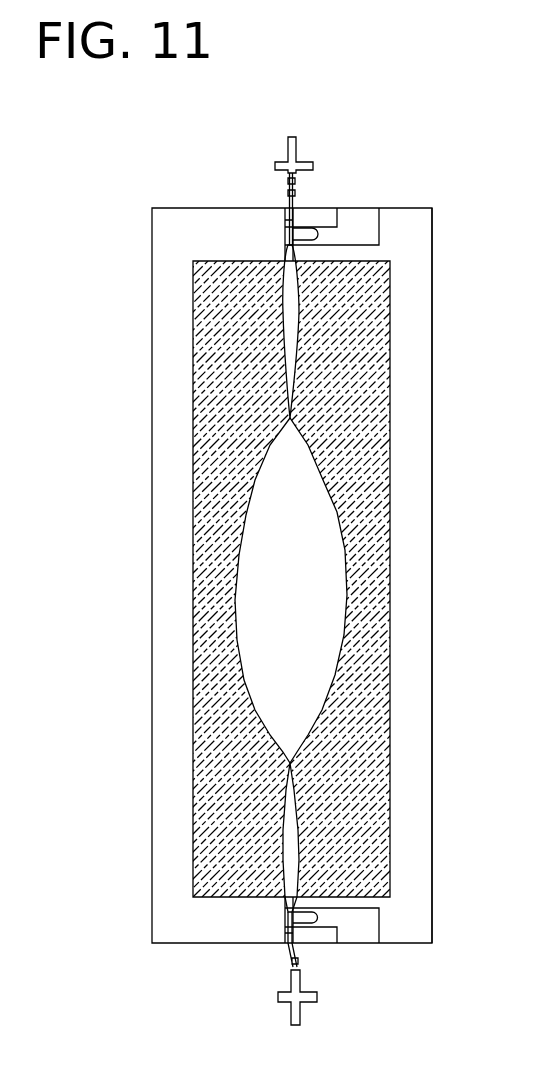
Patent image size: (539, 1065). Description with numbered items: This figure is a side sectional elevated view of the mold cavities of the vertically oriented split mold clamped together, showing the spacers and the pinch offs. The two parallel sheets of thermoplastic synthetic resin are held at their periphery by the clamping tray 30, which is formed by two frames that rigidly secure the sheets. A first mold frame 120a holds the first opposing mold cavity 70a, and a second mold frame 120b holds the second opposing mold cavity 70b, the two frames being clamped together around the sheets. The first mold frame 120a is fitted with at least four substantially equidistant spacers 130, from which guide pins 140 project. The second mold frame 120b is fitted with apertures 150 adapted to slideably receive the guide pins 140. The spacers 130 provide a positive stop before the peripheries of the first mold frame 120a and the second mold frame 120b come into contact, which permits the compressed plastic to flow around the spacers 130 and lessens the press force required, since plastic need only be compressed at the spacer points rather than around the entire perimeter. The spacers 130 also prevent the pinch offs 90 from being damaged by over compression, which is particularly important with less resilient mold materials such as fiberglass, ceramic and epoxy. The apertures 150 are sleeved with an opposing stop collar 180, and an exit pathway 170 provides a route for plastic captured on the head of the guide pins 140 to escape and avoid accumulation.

The clamping tray 30 is at (293, 137).
The first opposing mold cavity 70a is at (193, 378).
The second opposing mold cavity 70b is at (390, 323).
The pinch offs 90 is at (290, 420).
The first mold frame 120a is at (152, 307).
The second mold frame 120b is at (432, 208).
The spacers 130 is at (287, 220).
The guide pins 140 is at (307, 230).
The apertures 150 is at (285, 245).
The exit pathway 170 is at (365, 208).
The opposing stop collar 180 is at (293, 206).